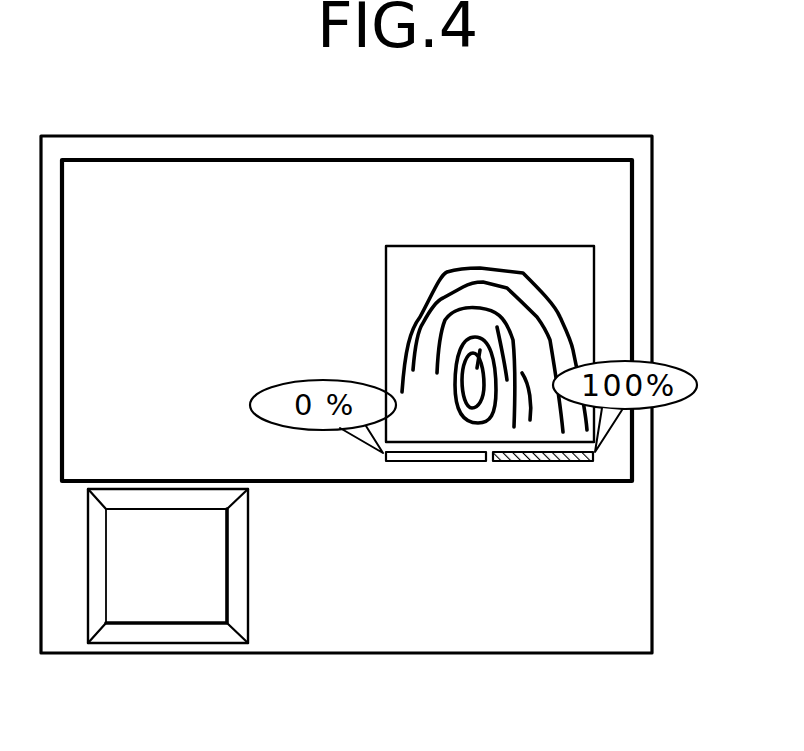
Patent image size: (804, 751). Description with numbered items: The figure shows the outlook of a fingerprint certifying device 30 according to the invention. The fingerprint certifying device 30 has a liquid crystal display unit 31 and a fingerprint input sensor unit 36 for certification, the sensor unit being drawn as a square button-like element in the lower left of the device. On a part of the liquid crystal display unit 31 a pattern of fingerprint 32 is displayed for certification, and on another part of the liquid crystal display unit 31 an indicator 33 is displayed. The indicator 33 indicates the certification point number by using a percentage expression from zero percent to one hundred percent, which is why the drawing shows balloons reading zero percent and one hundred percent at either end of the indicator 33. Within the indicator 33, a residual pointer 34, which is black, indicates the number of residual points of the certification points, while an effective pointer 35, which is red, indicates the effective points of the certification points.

The fingerprint certifying device 30 is at (653, 182).
The liquid crystal display unit 31 is at (612, 222).
The pattern of fingerprint 32 is at (580, 290).
The indicator 33 is at (556, 495).
The residual pointer 34 is at (593, 466).
The effective pointer 35 is at (486, 466).
The fingerprint input sensor unit 36 is at (206, 588).